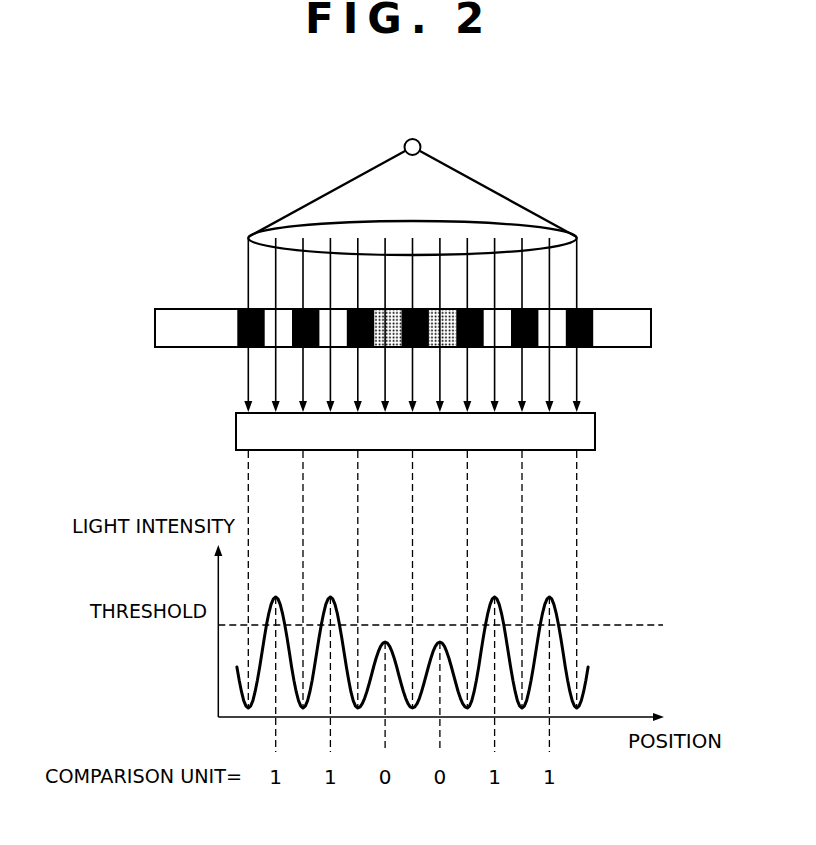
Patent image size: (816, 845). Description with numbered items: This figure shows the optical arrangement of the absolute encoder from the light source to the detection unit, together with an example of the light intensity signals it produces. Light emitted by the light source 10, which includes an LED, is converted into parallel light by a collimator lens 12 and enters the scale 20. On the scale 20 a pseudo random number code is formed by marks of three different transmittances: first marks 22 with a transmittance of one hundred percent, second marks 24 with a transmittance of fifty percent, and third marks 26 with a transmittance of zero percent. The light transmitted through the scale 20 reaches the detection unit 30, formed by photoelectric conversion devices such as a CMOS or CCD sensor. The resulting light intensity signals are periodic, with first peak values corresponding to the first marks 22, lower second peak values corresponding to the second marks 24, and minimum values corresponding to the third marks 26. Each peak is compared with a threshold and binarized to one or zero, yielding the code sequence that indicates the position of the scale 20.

The light source 10 is at (420, 142).
The collimator lens 12 is at (513, 222).
The scale 20 is at (417, 267).
The first mark 22 is at (270, 313).
The second mark 24 is at (450, 308).
The third mark 26 is at (583, 308).
The detection unit 30 is at (595, 428).